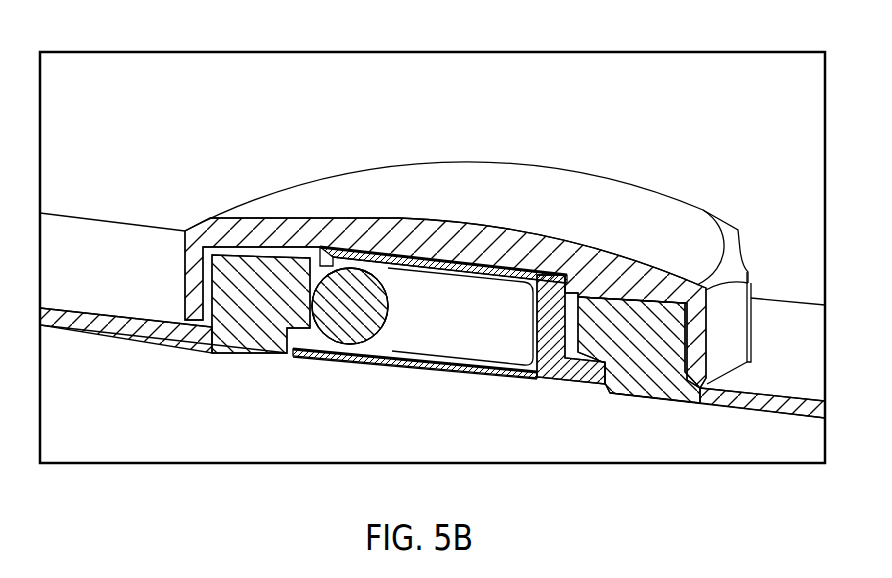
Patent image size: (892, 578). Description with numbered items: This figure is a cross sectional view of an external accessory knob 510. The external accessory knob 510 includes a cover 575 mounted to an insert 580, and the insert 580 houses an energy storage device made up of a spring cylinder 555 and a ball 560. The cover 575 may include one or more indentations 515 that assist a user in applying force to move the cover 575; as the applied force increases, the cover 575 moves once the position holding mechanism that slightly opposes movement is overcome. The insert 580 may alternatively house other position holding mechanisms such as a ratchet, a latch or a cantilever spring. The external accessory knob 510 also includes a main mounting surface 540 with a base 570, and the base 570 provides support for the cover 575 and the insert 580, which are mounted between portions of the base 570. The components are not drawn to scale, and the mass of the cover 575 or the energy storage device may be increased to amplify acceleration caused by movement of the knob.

The external accessory knob 510 is at (207, 116).
The indentations 515 is at (752, 283).
The main mounting surface 540 is at (83, 230).
The spring cylinder 555 is at (435, 330).
The ball 560 is at (335, 318).
The base 570 is at (263, 317).
The cover 575 is at (448, 183).
The insert 580 is at (553, 355).